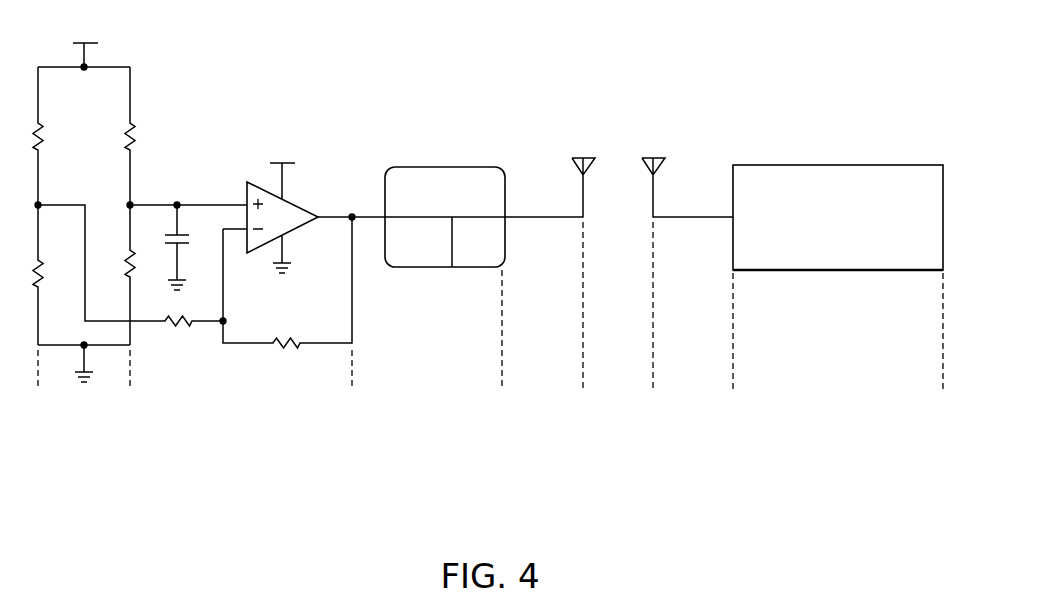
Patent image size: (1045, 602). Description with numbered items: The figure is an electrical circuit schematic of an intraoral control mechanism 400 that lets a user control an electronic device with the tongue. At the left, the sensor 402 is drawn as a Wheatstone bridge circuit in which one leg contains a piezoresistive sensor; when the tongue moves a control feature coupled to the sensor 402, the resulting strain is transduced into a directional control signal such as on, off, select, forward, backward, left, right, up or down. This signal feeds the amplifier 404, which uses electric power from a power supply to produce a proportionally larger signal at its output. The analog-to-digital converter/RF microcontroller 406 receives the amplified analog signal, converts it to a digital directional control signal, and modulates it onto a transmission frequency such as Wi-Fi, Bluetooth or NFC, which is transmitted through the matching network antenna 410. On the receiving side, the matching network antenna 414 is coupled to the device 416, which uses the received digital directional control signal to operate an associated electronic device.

The intraoral control mechanism 400 is at (650, 91).
The sensor 402 is at (40, 397).
The amplifier 404 is at (348, 397).
The analog-to-digital converter/RF microcontroller 406 is at (500, 397).
The matching network antenna 410 is at (505, 397).
The matching network antenna 414 is at (732, 397).
The device 416 is at (737, 397).